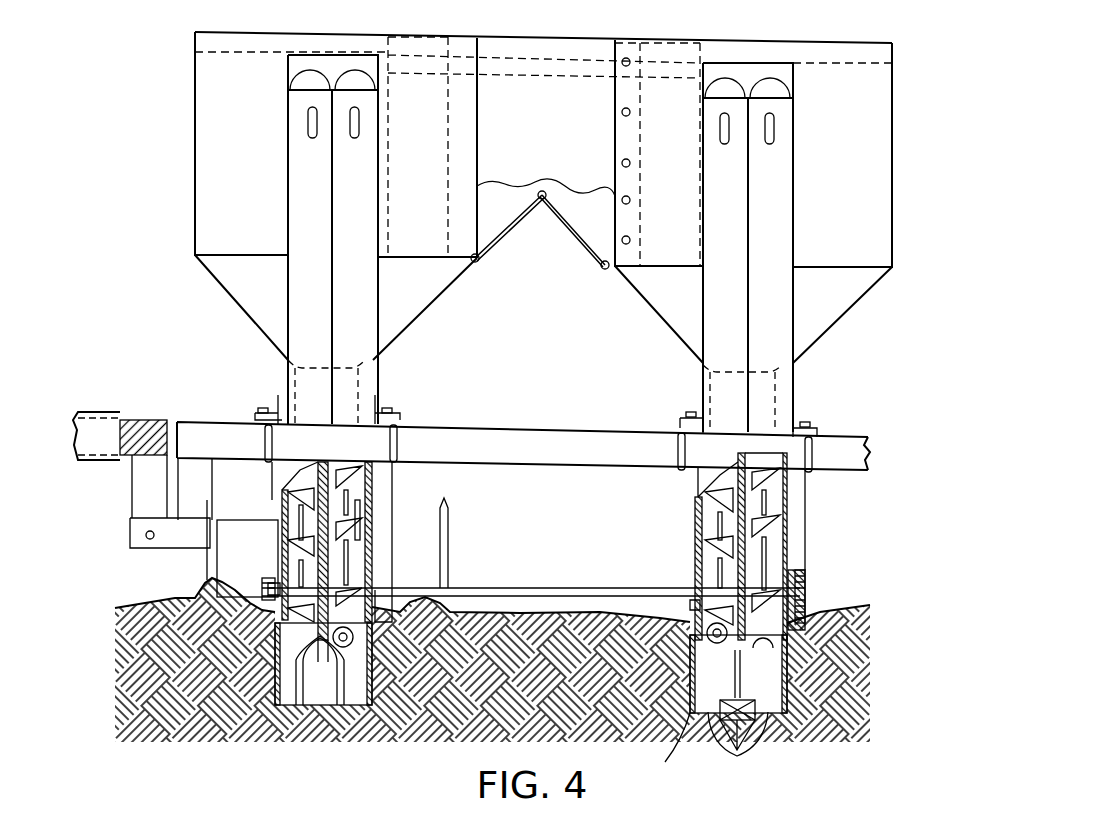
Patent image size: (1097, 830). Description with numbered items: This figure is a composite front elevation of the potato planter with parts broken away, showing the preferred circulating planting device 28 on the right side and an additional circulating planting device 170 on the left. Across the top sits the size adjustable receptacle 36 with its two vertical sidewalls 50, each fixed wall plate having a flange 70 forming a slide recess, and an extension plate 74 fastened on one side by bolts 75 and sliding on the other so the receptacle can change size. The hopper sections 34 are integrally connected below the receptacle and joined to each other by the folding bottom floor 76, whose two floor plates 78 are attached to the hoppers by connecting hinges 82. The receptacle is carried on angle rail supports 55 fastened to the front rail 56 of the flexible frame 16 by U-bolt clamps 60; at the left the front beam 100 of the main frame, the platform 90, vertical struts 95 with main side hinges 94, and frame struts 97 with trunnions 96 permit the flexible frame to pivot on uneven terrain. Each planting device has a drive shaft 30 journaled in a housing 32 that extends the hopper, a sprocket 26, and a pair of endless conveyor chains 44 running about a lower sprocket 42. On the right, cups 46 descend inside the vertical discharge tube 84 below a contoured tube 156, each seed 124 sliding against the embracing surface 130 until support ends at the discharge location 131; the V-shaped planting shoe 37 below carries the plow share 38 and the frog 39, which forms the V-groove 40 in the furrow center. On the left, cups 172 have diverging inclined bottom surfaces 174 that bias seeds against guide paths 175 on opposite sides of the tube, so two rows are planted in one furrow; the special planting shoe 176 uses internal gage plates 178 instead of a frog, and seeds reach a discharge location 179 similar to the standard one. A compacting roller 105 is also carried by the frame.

The flexible frame 16 is at (529, 418).
The sprocket 26 is at (808, 578).
The circulating planting device 28 is at (800, 186).
The drive shaft 30 is at (648, 588).
The housing 32 is at (376, 590).
The hopper section 34 is at (218, 278).
The size adjustable receptacle 36 is at (894, 172).
The planting shoe 37 is at (669, 747).
The plow share 38 is at (742, 670).
The furrow centerline forming frog 39 is at (765, 735).
The V-groove 40 is at (734, 748).
The lower sprocket 42 is at (272, 570).
The endless conveyor chains 44 is at (366, 502).
The cup 46 is at (712, 524).
The sidewall 50 is at (195, 138).
The angle rail support 55 is at (385, 405).
The front rail 56 is at (215, 440).
The U-bolt clamp 60 is at (362, 438).
The flange 70 is at (240, 36).
The extension plate 74 is at (545, 43).
The bolts 75 is at (633, 157).
The folding bottom floor 76 is at (515, 229).
The floor plate 78 is at (513, 212).
The connecting hinge 82 is at (475, 264).
The vertical discharge tube 84 is at (780, 203).
The platform 90 is at (138, 420).
The main side hinge 94 is at (150, 542).
The vertical strut 95 is at (190, 470).
The trunnion 96 is at (138, 530).
The frame strut 97 is at (140, 495).
The front beam 100 is at (100, 430).
The compacting roller 105 is at (452, 530).
The seed 124 is at (702, 548).
The embracing surface 130 is at (362, 482).
The discharge location 131 is at (808, 625).
The contoured tube 156 is at (300, 62).
The additional circulating planting device 170 is at (365, 540).
The seed conveyance cup 172 is at (292, 546).
The inclined bottom surface 174 is at (292, 522).
The guide path 175 is at (296, 500).
The special planting shoe 176 is at (372, 698).
The gage plate 178 is at (322, 700).
The discharge location 179 is at (316, 645).